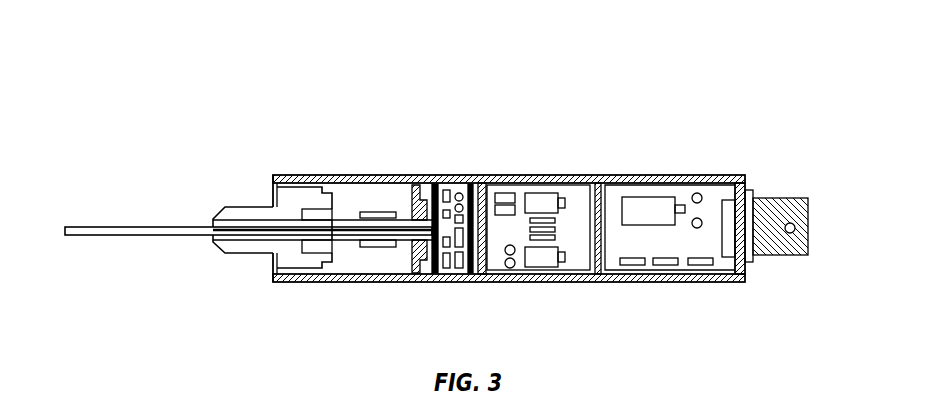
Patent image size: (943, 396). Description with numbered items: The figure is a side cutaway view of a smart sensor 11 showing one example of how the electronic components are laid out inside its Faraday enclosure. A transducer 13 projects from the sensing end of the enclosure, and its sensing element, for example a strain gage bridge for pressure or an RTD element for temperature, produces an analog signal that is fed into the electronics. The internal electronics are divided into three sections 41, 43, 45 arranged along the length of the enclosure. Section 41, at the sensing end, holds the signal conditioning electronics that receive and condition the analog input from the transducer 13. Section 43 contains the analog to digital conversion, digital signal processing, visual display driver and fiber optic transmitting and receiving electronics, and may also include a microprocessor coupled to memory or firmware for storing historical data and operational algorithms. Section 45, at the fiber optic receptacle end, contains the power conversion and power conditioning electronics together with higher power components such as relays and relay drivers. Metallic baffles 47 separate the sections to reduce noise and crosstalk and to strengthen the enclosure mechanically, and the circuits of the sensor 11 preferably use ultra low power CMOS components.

The smart sensor 11 is at (258, 94).
The transducer 13 is at (98, 226).
The section 41 is at (275, 167).
The section 43 is at (478, 167).
The section 45 is at (743, 167).
The metallic baffles 47 is at (480, 283).